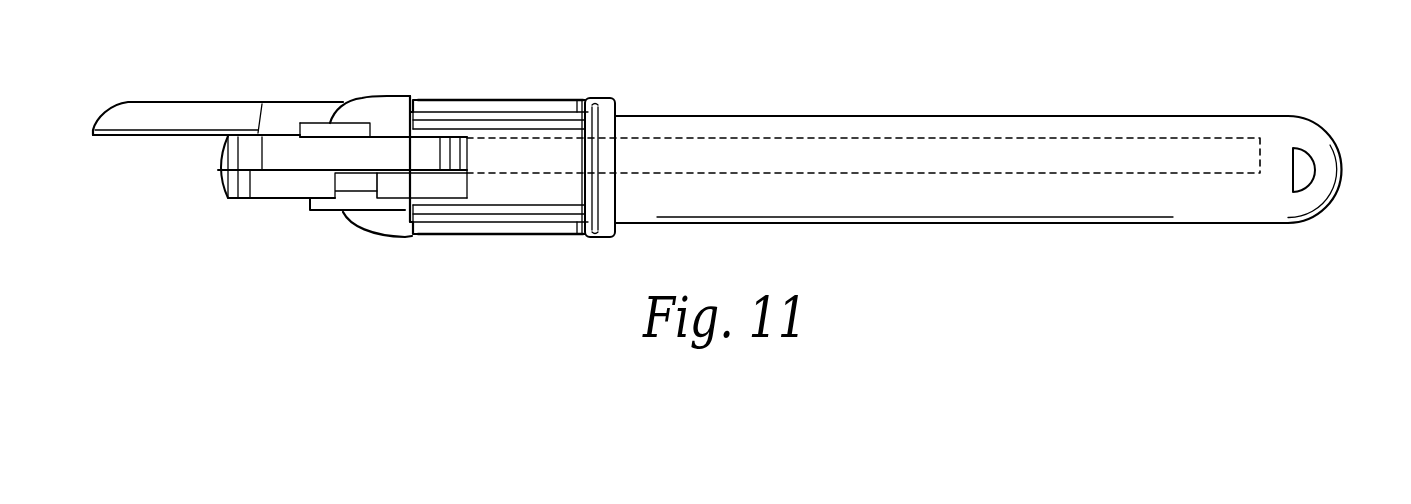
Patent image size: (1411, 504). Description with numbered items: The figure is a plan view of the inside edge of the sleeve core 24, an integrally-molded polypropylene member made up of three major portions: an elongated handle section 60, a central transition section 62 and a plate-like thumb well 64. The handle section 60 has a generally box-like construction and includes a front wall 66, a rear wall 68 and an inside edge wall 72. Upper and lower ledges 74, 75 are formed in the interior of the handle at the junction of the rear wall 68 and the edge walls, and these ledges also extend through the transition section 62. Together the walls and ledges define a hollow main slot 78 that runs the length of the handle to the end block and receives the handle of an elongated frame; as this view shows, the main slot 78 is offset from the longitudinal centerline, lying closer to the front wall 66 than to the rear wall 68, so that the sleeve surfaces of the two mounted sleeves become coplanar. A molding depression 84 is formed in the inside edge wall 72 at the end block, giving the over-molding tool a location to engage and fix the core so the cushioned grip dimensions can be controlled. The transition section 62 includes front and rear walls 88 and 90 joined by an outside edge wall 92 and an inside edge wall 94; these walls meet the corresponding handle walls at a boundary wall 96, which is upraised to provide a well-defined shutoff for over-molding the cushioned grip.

The sleeve core 24 is at (1217, 115).
The handle section 60 is at (1253, 202).
The transition section 62 is at (510, 245).
The thumb well 64 is at (180, 103).
The front wall 66 is at (1038, 115).
The rear wall 68 is at (1098, 226).
The inside edge wall 72 is at (947, 196).
The upper ledge 74 is at (293, 182).
The lower ledge 75 is at (393, 187).
The main slot 78 is at (1102, 140).
The molding depression 84 is at (1304, 170).
The front wall of transition section 88 is at (542, 98).
The rear wall of transition section 90 is at (553, 240).
The outside edge wall of transition section 92 is at (388, 155).
The inside edge wall of transition section 94 is at (863, 168).
The boundary wall 96 is at (617, 223).